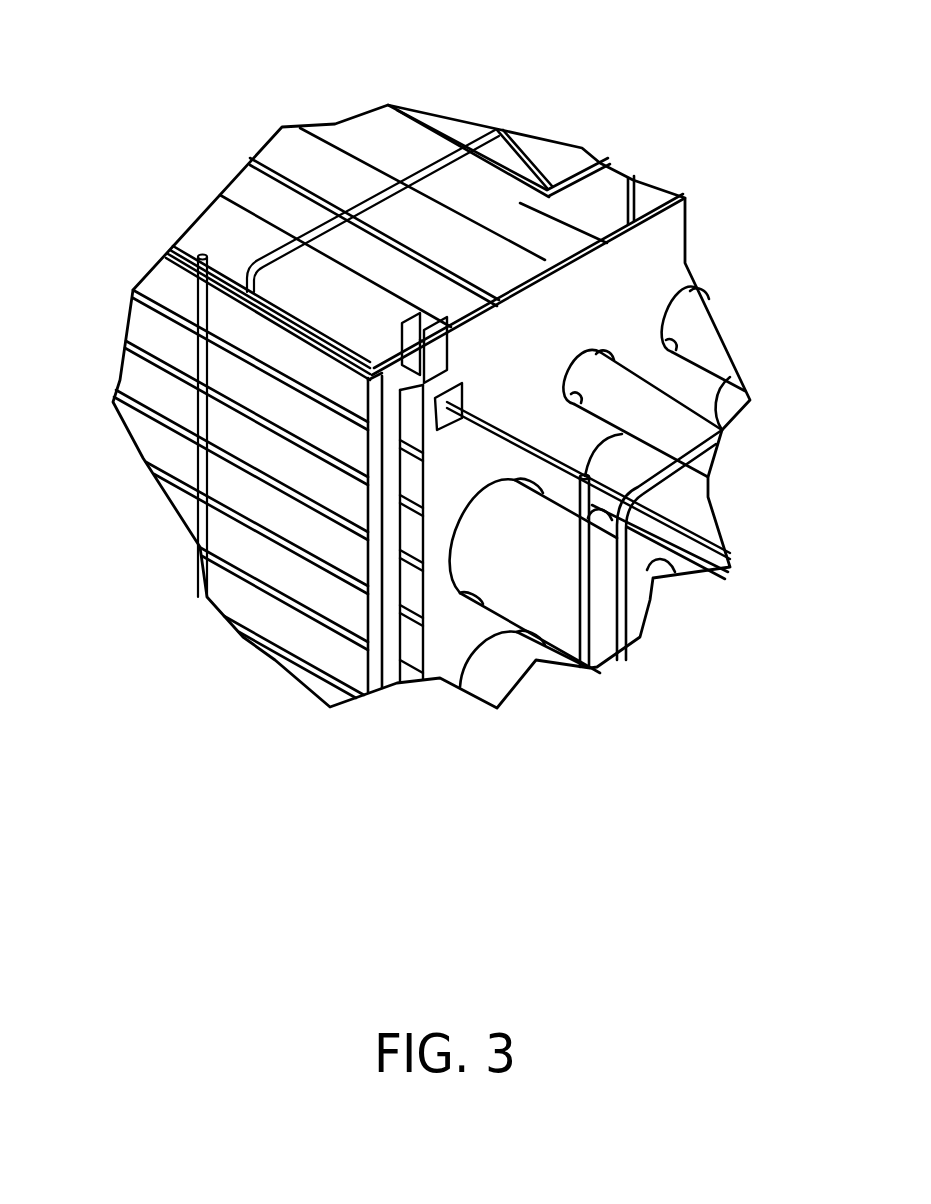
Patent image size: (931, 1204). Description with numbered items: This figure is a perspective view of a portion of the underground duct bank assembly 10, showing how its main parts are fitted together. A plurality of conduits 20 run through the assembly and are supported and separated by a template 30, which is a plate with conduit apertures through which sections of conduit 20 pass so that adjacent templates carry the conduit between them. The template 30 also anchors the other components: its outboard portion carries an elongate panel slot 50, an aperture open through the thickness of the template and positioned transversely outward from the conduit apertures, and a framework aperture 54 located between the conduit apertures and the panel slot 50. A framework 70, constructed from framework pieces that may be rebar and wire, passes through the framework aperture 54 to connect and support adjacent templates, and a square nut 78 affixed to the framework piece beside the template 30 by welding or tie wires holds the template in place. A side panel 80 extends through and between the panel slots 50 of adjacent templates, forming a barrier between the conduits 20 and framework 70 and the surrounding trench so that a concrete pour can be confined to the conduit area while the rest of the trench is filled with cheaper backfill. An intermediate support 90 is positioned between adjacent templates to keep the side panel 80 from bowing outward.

The underground duct bank assembly 10 is at (431, 354).
The conduits 20 is at (630, 484).
The template 30 is at (570, 427).
The panel slot 50 is at (475, 577).
The framework aperture 54 is at (460, 560).
The framework 70 is at (398, 162).
The square nut 78 is at (254, 425).
The side panel 80 is at (216, 458).
The intermediate support 90 is at (158, 449).